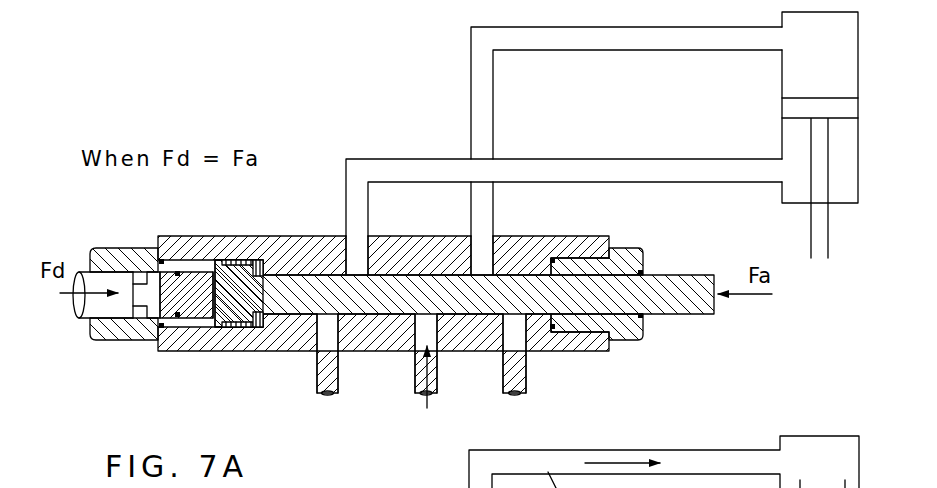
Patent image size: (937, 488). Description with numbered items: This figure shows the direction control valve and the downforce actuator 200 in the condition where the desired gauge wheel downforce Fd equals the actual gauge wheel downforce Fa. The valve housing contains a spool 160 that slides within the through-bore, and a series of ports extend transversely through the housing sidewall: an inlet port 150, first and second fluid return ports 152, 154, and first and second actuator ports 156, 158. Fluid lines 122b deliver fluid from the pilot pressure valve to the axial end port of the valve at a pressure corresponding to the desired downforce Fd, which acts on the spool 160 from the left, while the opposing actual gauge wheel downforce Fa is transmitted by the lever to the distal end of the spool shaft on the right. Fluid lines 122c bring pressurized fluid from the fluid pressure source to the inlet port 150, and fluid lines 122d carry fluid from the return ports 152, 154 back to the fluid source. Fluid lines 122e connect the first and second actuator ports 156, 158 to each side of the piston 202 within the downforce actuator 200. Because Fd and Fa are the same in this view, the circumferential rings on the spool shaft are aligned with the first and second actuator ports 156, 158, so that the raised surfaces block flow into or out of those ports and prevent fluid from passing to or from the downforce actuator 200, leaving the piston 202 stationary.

The fluid lines 122b is at (83, 312).
The fluid lines 122c is at (417, 392).
The fluid lines 122d is at (317, 388).
The fluid lines 122e is at (550, 45).
The inlet port 150 is at (418, 355).
The first fluid return port 152 is at (317, 358).
The second fluid return port 154 is at (518, 350).
The first actuator port 156 is at (357, 238).
The second actuator port 158 is at (483, 240).
The spool 160 is at (673, 312).
The downforce actuator 200 is at (793, 71).
The piston 202 is at (793, 110).